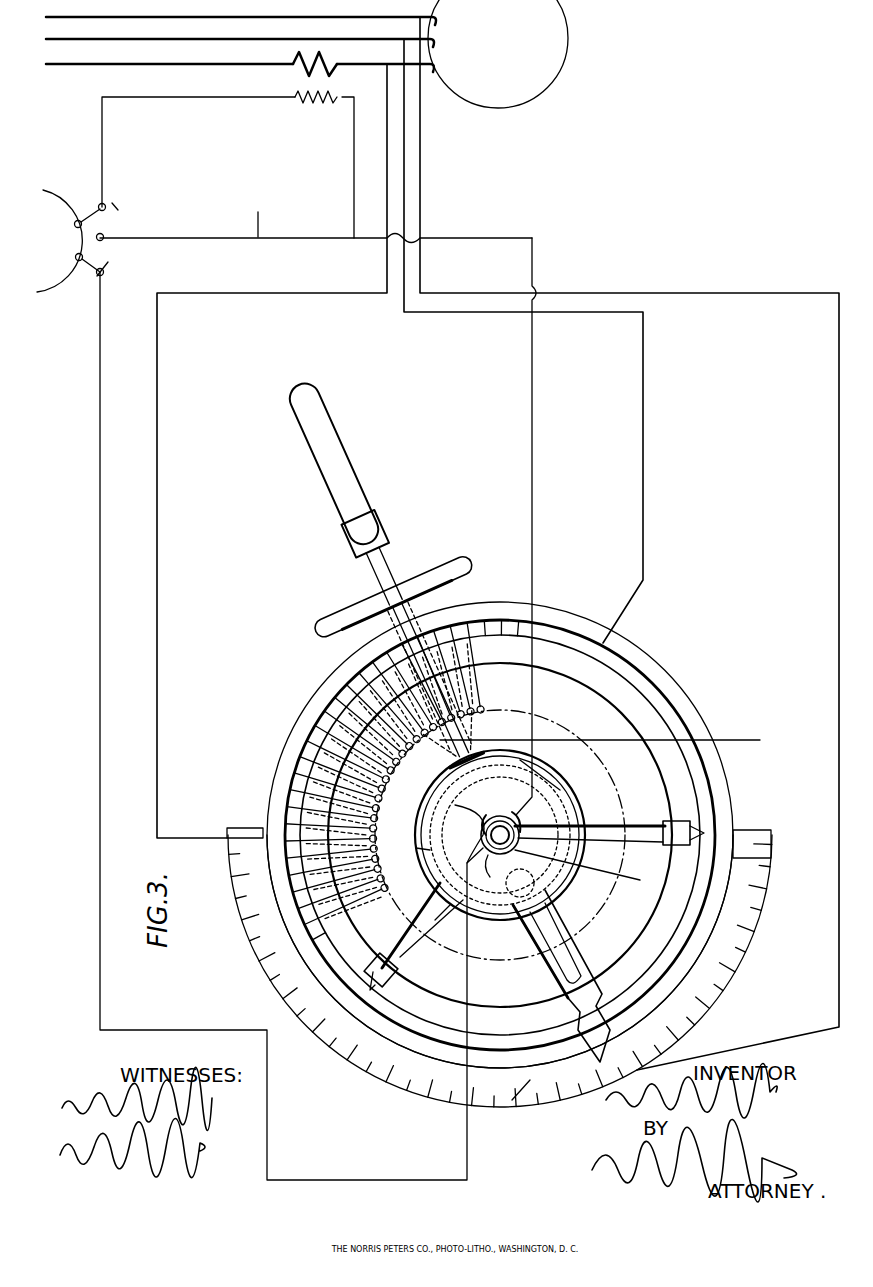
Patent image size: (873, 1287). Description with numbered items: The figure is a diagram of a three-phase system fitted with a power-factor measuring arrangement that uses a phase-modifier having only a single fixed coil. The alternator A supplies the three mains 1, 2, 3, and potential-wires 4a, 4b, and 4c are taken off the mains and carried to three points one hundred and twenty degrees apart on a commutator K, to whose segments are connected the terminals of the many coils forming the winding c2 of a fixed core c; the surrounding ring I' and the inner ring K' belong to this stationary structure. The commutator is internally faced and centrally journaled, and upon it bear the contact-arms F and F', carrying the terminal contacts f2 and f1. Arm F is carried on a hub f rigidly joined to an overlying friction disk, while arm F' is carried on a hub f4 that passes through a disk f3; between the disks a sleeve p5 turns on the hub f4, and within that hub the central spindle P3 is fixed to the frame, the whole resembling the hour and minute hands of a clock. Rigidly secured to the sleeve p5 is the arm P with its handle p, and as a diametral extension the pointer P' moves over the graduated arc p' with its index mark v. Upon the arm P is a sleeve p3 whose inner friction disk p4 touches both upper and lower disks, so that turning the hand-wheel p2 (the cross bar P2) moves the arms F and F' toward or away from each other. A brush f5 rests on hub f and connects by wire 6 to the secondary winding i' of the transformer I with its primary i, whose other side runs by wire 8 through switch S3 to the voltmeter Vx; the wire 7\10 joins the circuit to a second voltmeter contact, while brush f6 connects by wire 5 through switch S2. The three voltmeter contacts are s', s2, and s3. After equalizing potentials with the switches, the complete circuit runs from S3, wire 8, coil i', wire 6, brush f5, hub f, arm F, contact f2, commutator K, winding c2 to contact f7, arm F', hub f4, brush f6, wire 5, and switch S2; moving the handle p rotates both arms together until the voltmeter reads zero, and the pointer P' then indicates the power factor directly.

The main 1 is at (240, 71).
The main 2 is at (240, 46).
The main 3 is at (241, 21).
The potential-wire 4a is at (386, 146).
The potential-wire 4b is at (405, 160).
The potential-wire 4c is at (421, 135).
The wire 5 is at (99, 616).
The wire 6 is at (470, 238).
The wire 7 is at (236, 238).
The wire 8 is at (103, 150).
The wire 10 is at (265, 225).
The transformer I is at (306, 94).
The resistance i is at (327, 69).
The secondary winding i' is at (316, 112).
The alternator A is at (498, 54).
The voltmeter Vx is at (59, 222).
The switch S3 is at (84, 202).
The switch S2 is at (79, 275).
The voltmeter-contact s' is at (112, 197).
The voltmeter-contact s2 is at (109, 228).
The voltmeter-contact s3 is at (110, 270).
The commutator K is at (461, 827).
The contact ring K' is at (524, 835).
The fixed core c is at (500, 860).
The winding c2 is at (380, 800).
The outer ring I' is at (500, 835).
The graduated scale v is at (499, 967).
The graduated arc p' is at (510, 1100).
The arm P is at (364, 580).
The handle p is at (324, 468).
The cross bar P2 is at (364, 582).
The hand-wheel p2 is at (399, 591).
The sleeve p3 is at (422, 747).
The friction gear p4 is at (488, 722).
The sleeve p5 is at (534, 887).
The pointer P' is at (559, 976).
The central spindle P3 is at (577, 873).
The contact-arm F is at (600, 791).
The contact-arm F' is at (422, 935).
The hub f is at (500, 835).
The terminal contact f1 is at (487, 871).
The terminal contact f2 is at (683, 822).
The disk f3 is at (410, 861).
The hub f4 is at (462, 834).
The brush f5 is at (560, 775).
The brush f6 is at (442, 923).
The contact f7 is at (375, 966).